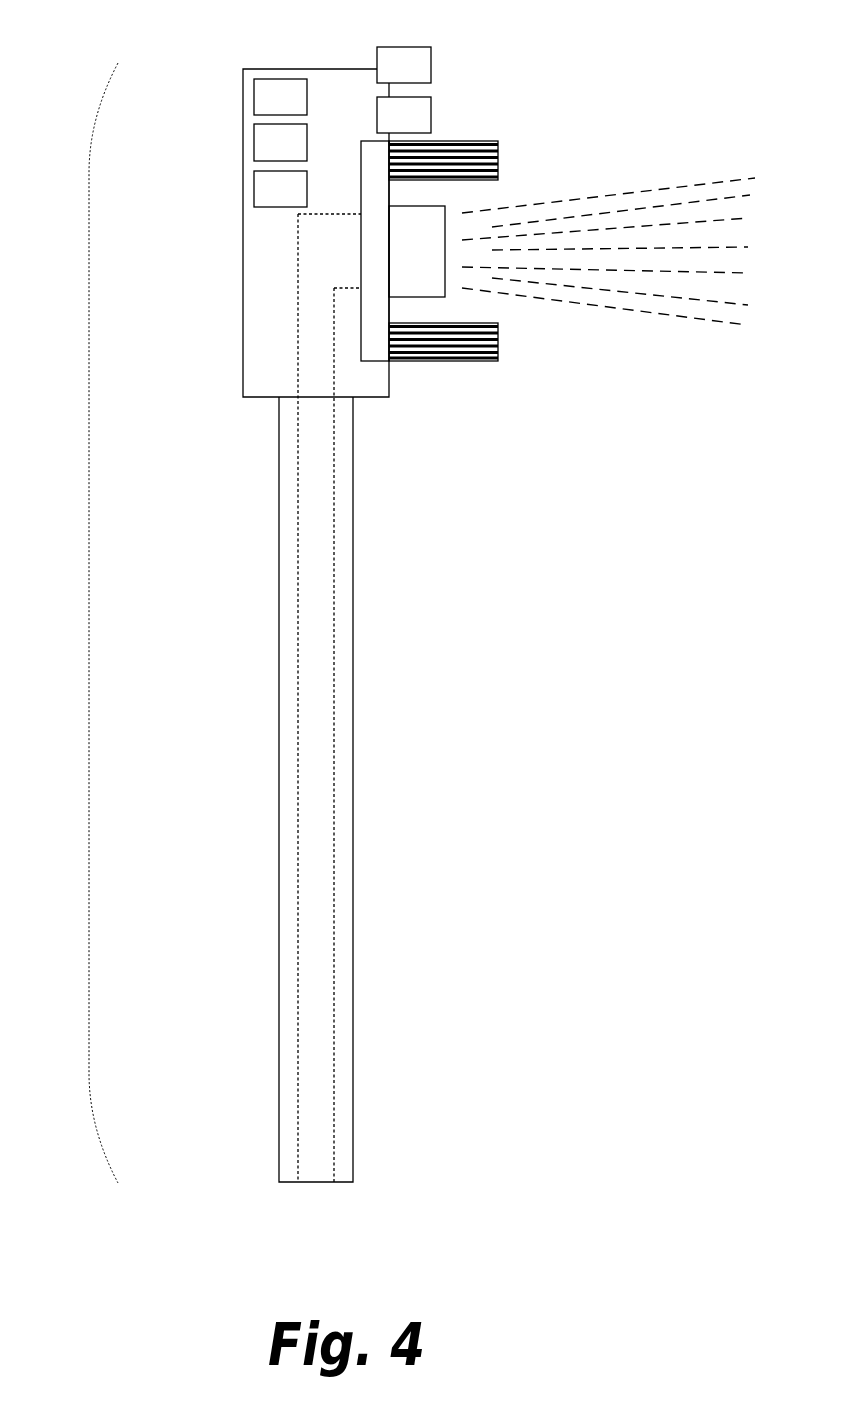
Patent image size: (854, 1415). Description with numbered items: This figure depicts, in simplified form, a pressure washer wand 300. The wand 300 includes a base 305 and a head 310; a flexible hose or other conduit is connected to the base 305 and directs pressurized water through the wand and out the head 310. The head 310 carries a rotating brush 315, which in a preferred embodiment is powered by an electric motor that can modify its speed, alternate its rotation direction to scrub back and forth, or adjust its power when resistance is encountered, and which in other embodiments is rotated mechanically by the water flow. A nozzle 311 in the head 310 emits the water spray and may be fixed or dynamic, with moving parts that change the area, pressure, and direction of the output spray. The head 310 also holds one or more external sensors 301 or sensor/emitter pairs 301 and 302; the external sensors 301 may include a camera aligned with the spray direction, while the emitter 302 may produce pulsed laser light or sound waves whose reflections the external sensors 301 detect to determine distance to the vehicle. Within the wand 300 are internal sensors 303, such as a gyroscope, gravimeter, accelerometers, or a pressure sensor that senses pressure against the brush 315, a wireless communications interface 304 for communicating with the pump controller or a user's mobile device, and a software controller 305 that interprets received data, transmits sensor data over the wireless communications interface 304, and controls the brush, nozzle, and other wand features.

The wand 300 is at (68, 623).
The head 310 is at (243, 69).
The external sensors 301 is at (404, 65).
The emitter 302 is at (404, 115).
The internal sensors 303 is at (280, 97).
The wireless communications interface 304 is at (280, 142).
The base 305 is at (310, 1174).
The nozzle 311 is at (417, 251).
The rotating brush 315 is at (499, 164).